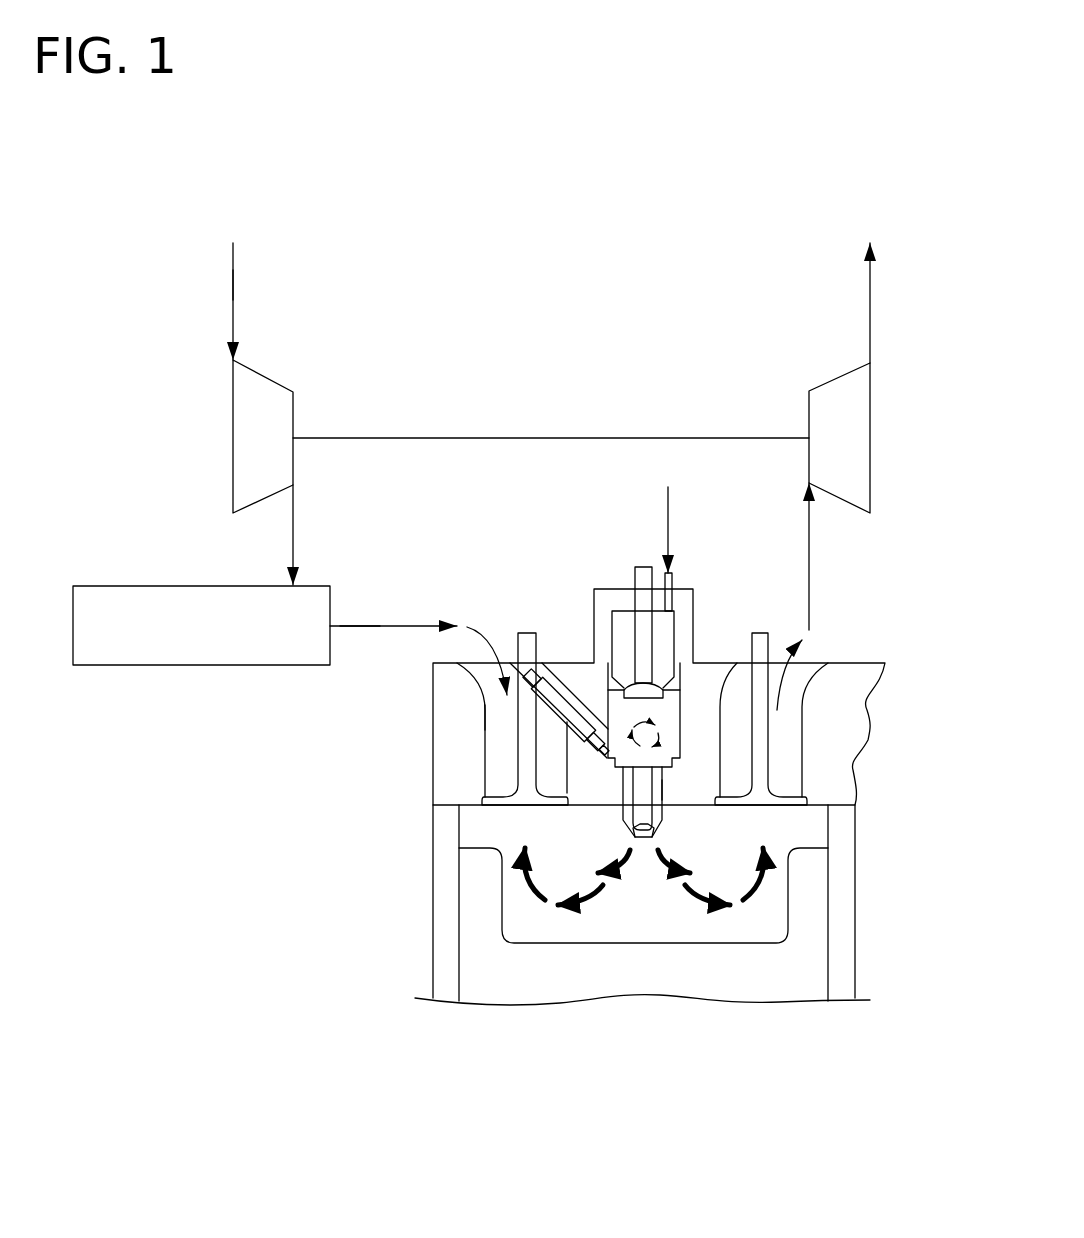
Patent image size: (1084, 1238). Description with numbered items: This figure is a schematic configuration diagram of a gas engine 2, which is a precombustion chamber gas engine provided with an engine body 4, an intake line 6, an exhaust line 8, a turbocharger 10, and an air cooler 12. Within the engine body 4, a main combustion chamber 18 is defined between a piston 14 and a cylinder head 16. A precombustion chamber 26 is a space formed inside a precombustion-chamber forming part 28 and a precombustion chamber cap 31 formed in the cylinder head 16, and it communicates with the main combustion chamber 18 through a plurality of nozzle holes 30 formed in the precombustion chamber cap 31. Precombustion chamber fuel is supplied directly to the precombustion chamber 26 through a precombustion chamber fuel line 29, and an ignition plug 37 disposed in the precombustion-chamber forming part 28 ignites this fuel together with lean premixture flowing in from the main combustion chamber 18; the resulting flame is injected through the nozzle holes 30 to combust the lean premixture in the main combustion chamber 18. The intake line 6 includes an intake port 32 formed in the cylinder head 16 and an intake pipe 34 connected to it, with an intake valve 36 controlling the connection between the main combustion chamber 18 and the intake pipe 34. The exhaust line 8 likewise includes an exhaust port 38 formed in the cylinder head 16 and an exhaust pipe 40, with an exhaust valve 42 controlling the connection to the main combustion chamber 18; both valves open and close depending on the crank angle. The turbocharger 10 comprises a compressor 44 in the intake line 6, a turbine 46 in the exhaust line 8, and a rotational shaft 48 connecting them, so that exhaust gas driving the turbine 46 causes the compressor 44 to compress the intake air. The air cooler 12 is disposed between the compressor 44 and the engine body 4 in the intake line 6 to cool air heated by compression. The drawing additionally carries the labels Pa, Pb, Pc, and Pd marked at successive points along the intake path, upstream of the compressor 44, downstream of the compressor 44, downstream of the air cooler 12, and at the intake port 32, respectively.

The gas engine 2 is at (722, 128).
The engine body 4 is at (878, 916).
The intake line 6 is at (233, 320).
The exhaust line 8 is at (870, 305).
The turbocharger 10 is at (203, 407).
The air cooler 12 is at (73, 625).
The piston 14 is at (565, 997).
The cylinder head 16 is at (443, 768).
The main combustion chamber 18 is at (673, 927).
The precombustion chamber 26 is at (668, 710).
The precombustion-chamber forming part 28 is at (597, 703).
The precombustion chamber fuel line 29 is at (670, 512).
The nozzle holes 30 is at (628, 840).
The precombustion chamber cap 31 is at (663, 790).
The intake port 32 is at (495, 778).
The intake pipe 34 is at (407, 620).
The intake valve 36 is at (495, 805).
The ignition plug 37 is at (555, 690).
The exhaust port 38 is at (790, 770).
The exhaust pipe 40 is at (809, 565).
The exhaust valve 42 is at (780, 804).
The compressor 44 is at (275, 373).
The turbine 46 is at (870, 410).
The rotational shaft 48 is at (577, 438).
The atmospheric pressure Pa is at (233, 280).
The compressor outlet pressure Pb is at (293, 538).
The cooler outlet pressure Pc is at (367, 622).
The intake port pressure Pd is at (485, 718).